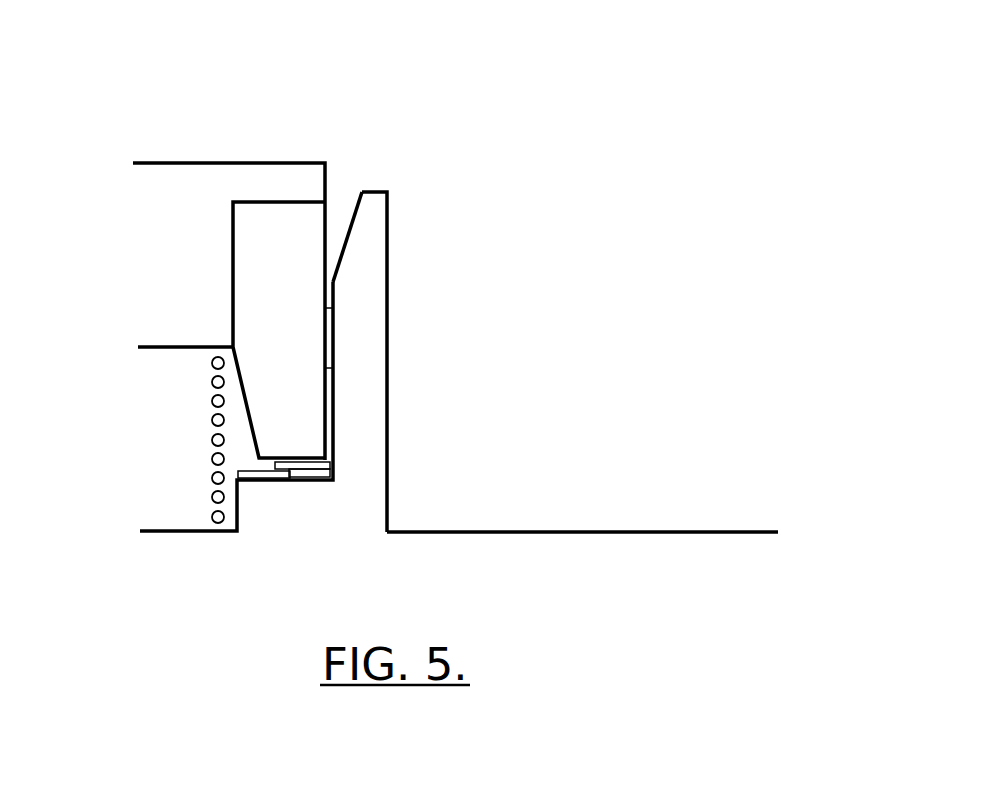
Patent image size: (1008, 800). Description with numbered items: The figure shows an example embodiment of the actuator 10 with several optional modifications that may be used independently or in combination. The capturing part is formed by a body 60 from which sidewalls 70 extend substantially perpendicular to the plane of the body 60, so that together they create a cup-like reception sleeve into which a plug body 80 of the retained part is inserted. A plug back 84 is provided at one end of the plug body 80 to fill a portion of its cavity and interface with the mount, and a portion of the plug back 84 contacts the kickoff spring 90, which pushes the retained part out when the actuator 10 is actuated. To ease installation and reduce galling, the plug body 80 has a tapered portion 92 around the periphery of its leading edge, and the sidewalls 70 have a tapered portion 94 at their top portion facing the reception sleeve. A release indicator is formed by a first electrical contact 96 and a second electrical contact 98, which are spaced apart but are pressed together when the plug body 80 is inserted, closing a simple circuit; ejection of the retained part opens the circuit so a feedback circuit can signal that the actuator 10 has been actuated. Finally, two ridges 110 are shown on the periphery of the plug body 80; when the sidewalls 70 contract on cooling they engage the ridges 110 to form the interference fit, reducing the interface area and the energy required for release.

The actuator 10 is at (561, 64).
The body 60 is at (573, 540).
The sidewalls 70 is at (368, 333).
The plug body 80 is at (273, 242).
The plug back 84 is at (187, 202).
The kickoff spring 90 is at (205, 398).
The tapered portion 92 is at (327, 447).
The tapered portion 94 is at (340, 255).
The first electrical contact 96 is at (312, 470).
The second electrical contact 98 is at (257, 473).
The ridges 110 is at (326, 312).